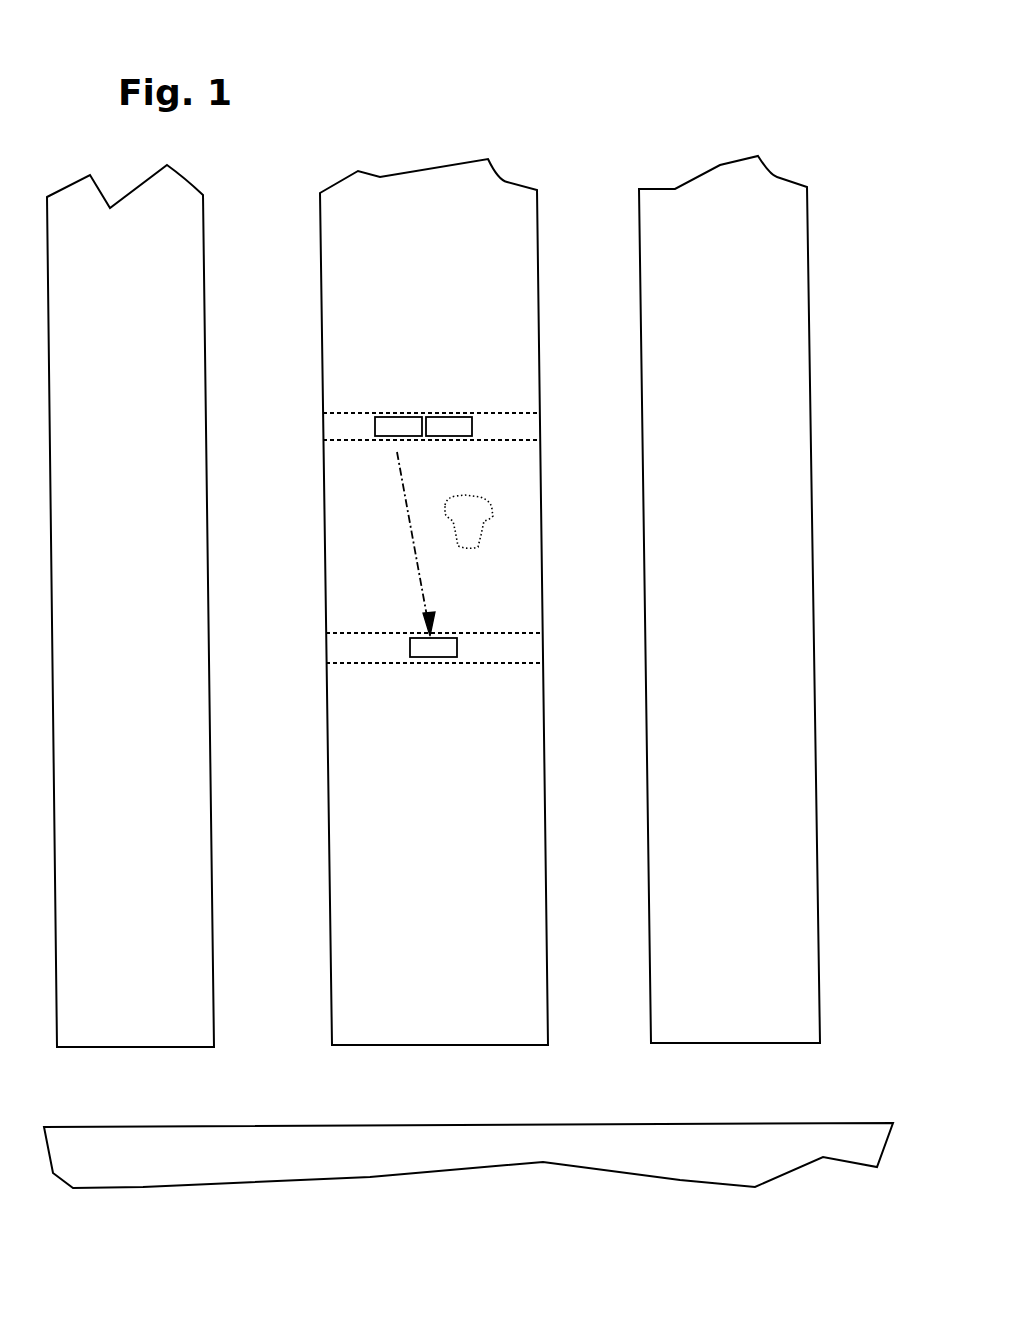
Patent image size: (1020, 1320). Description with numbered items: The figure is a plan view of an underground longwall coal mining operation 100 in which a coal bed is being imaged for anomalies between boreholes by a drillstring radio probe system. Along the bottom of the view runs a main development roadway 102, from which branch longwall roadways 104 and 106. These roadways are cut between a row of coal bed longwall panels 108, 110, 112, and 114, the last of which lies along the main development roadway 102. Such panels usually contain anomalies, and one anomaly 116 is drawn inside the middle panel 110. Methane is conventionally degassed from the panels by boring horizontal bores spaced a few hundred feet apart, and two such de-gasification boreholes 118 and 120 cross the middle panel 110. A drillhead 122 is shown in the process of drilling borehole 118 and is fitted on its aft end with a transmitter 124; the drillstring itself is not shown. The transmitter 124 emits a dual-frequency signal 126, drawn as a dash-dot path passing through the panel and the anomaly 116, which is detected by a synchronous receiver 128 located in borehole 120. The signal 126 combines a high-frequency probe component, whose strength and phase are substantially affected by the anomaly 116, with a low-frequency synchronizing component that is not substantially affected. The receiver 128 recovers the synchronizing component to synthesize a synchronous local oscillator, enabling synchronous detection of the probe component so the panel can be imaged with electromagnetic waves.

The longwall coal mining operation 100 is at (335, 104).
The main development roadway 102 is at (600, 1102).
The longwall roadway 104 is at (253, 926).
The longwall roadway 106 is at (583, 923).
The coal bed longwall panel 108 is at (117, 927).
The coal bed longwall panel 110 is at (416, 923).
The coal bed longwall panel 112 is at (713, 922).
The coal bed longwall panel 114 is at (705, 1168).
The anomaly 116 is at (472, 494).
The de-gasification borehole 118 is at (341, 413).
The de-gasification borehole 120 is at (343, 633).
The drillhead 122 is at (447, 415).
The transmitter 124 is at (397, 415).
The dual-frequency signal 126 is at (405, 498).
The synchronous receiver 128 is at (430, 660).